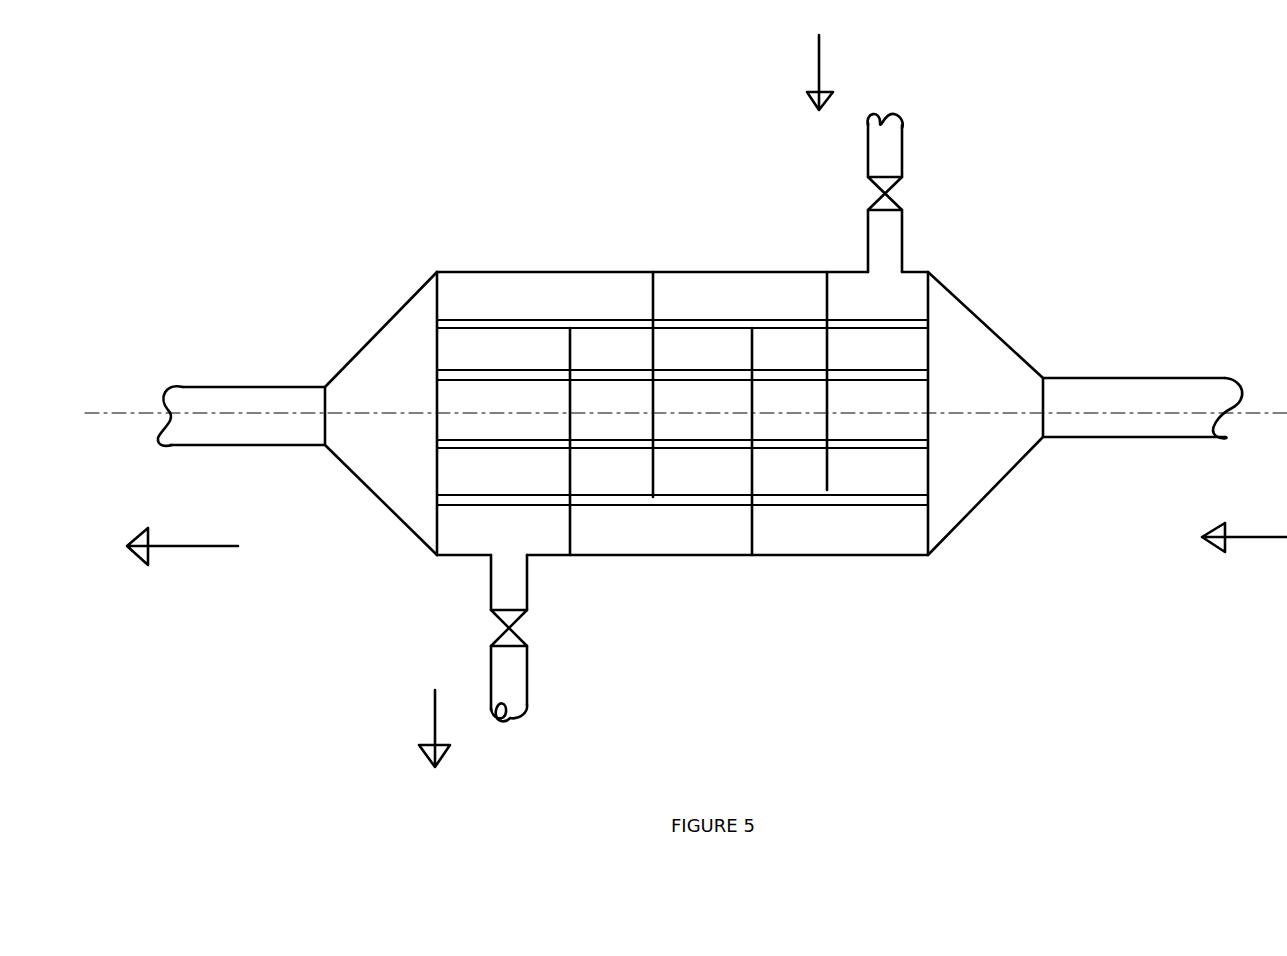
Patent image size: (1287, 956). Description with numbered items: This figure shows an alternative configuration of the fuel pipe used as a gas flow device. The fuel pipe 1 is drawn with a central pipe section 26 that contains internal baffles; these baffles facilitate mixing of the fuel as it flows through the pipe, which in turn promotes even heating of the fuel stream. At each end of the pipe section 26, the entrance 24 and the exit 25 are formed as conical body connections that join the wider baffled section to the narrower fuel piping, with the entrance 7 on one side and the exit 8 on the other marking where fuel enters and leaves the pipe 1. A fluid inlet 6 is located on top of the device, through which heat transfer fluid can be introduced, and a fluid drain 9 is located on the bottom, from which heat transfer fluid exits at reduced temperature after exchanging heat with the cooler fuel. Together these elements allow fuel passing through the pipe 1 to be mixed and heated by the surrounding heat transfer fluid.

The gas fuel flow pipe 1 is at (913, 373).
The fluid inlet 6 is at (887, 132).
The entrance 7 is at (1130, 388).
The exit 8 is at (224, 397).
The fluid drain 9 is at (518, 668).
The entrance 24 is at (987, 357).
The exit 25 is at (383, 362).
The pipe section 26 is at (503, 270).